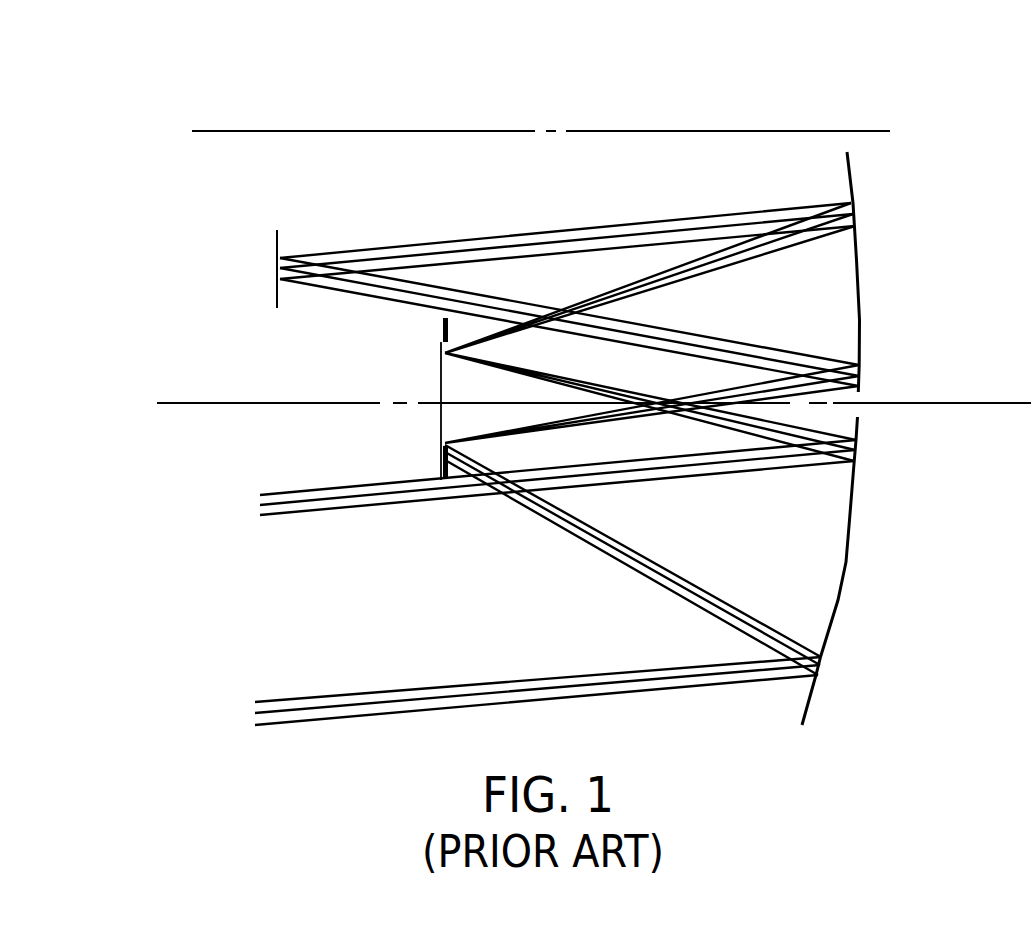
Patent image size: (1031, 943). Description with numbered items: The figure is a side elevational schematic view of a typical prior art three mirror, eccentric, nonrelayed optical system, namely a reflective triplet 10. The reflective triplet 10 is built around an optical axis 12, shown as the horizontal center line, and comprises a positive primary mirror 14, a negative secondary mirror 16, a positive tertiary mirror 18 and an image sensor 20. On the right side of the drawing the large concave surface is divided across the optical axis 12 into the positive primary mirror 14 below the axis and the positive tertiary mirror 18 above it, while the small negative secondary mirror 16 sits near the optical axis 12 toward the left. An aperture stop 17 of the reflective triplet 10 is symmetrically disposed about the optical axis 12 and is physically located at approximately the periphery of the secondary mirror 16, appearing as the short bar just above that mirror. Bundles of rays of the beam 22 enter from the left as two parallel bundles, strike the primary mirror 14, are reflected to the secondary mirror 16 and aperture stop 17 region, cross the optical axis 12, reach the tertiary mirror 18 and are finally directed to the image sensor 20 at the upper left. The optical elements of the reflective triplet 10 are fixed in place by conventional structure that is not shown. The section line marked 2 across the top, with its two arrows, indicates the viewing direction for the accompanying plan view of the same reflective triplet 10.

The section line 2- 2 is at (263, 104).
The reflective triplet 10 is at (932, 184).
The optical axis 12 is at (178, 405).
The positive primary mirror 14 is at (847, 562).
The negative secondary mirror 16 is at (440, 413).
The aperture stop 17 is at (443, 332).
The positive tertiary mirror 18 is at (862, 302).
The image sensor 20 is at (276, 273).
The beam 22 is at (392, 488).